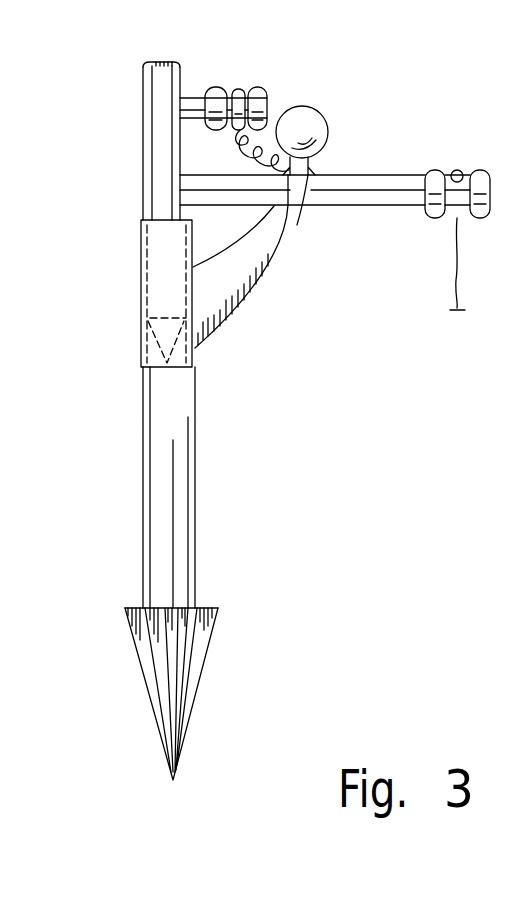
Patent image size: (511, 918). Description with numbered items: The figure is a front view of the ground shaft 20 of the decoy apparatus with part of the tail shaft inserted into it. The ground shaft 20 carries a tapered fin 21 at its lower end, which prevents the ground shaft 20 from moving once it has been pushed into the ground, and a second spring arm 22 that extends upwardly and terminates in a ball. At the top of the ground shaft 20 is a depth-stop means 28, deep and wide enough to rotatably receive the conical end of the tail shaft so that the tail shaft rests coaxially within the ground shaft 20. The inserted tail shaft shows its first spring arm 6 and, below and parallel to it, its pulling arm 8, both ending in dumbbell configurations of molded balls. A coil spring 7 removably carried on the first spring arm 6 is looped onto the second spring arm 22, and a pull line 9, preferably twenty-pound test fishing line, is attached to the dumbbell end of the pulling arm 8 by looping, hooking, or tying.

The first spring arm 6 is at (190, 97).
The coil spring 7 is at (328, 157).
The pulling arm 8 is at (410, 172).
The pull line 9 is at (461, 278).
The ground shaft 20 is at (265, 444).
The tapered fin 21 is at (200, 683).
The second spring arm 22 is at (253, 300).
The depth-stop means 28 is at (186, 381).